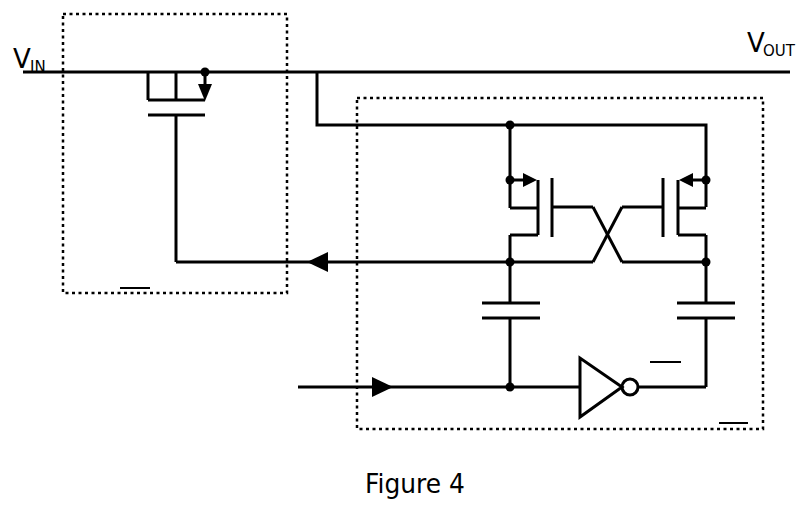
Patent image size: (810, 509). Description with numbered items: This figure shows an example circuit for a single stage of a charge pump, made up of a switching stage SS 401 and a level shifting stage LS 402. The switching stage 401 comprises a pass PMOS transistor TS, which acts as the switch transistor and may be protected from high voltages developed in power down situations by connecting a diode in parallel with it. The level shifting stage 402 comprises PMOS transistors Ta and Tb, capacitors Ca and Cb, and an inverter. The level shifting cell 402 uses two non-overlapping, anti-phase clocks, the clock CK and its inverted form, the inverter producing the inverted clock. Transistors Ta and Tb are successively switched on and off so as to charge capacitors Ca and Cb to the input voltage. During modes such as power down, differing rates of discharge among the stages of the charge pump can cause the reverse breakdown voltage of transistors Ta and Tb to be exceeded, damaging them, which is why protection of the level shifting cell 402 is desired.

The switching stage SS 401 is at (286, 153).
The level shifting stage LS 402 is at (510, 263).
The pass PMOS transistor TS is at (170, 165).
The PMOS transistor Ta is at (550, 193).
The PMOS transistor Tb is at (669, 215).
The capacitor Ca is at (533, 324).
The capacitor Cb is at (686, 324).